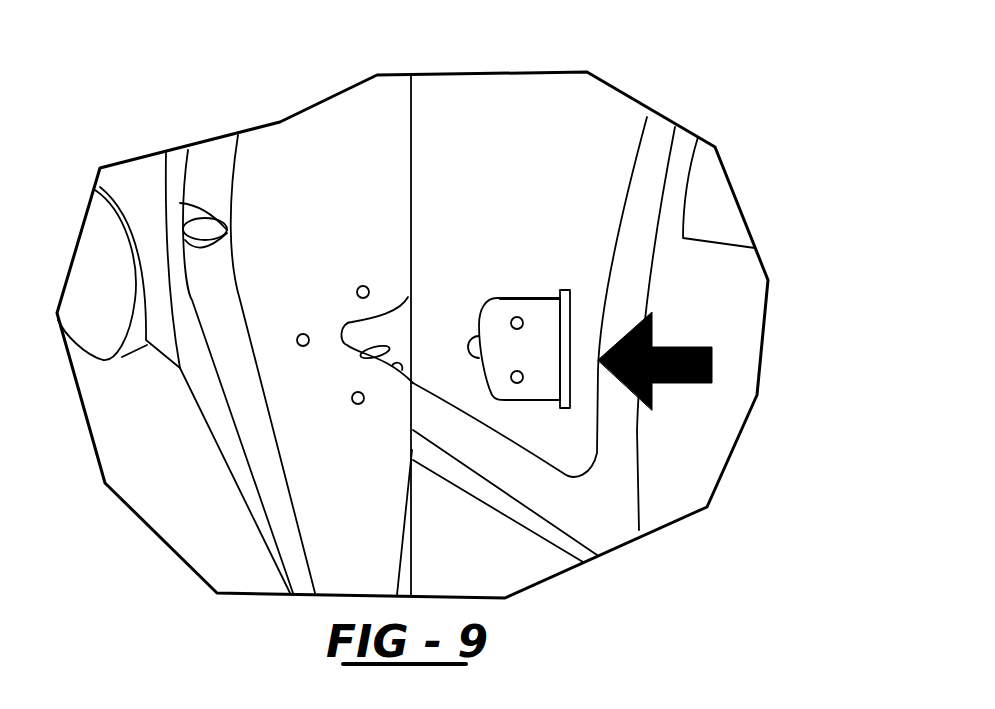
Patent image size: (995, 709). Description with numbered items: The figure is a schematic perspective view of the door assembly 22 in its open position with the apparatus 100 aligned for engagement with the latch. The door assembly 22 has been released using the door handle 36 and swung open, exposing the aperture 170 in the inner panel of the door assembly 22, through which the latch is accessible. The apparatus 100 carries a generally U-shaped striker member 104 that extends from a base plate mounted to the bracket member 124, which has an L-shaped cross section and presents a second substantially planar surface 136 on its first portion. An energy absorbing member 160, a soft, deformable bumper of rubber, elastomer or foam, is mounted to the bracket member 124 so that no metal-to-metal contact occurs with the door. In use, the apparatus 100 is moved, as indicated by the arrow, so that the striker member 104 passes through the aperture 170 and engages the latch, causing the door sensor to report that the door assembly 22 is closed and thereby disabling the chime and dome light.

The door assembly 22 is at (323, 442).
The door handle 36 is at (208, 228).
The apparatus 100 is at (515, 298).
The striker member 104 is at (473, 350).
The bracket member 124 is at (547, 307).
The second substantially planar surface 136 is at (532, 355).
The energy absorbing member 160 is at (572, 310).
The aperture 170 is at (352, 333).